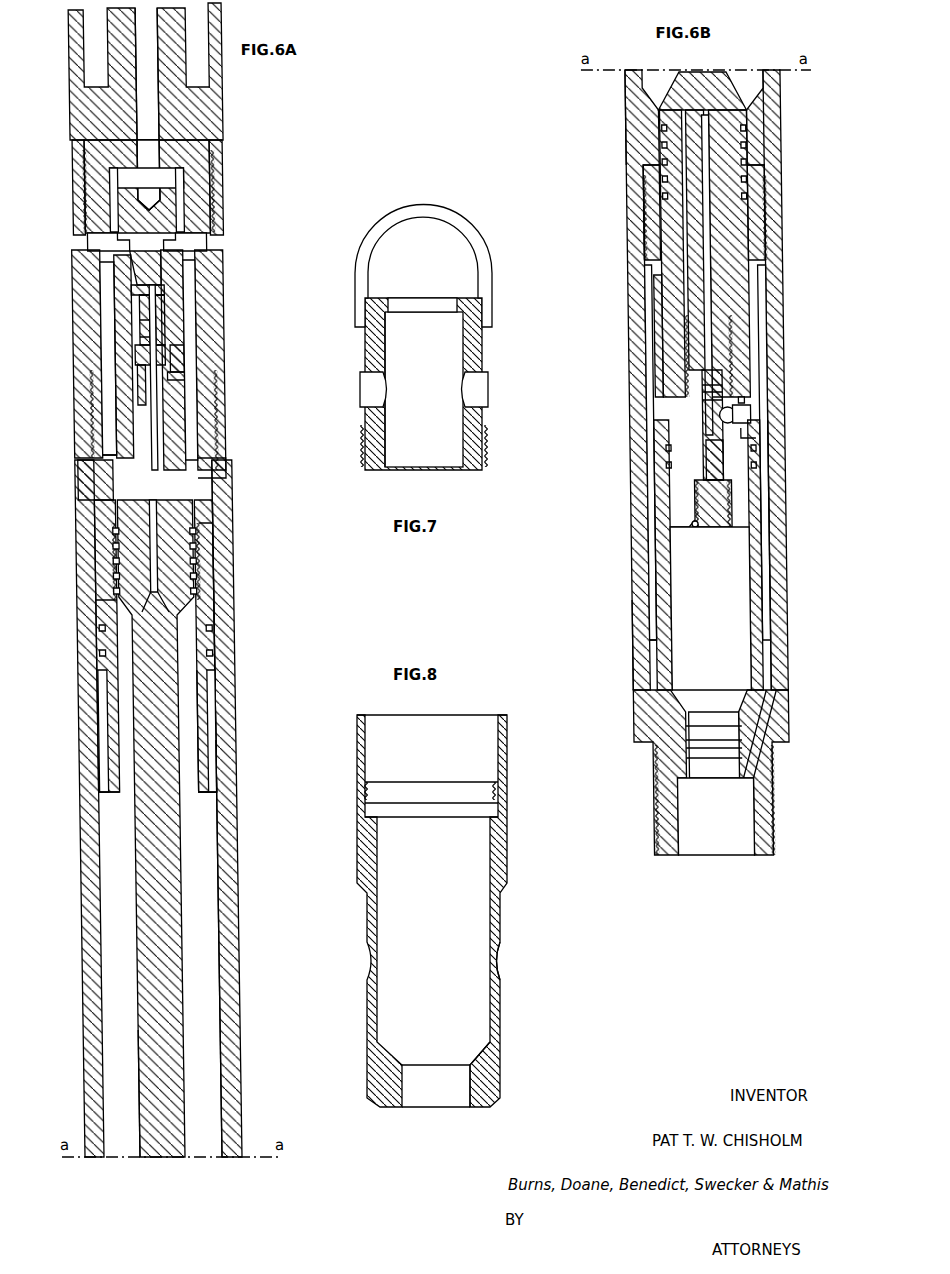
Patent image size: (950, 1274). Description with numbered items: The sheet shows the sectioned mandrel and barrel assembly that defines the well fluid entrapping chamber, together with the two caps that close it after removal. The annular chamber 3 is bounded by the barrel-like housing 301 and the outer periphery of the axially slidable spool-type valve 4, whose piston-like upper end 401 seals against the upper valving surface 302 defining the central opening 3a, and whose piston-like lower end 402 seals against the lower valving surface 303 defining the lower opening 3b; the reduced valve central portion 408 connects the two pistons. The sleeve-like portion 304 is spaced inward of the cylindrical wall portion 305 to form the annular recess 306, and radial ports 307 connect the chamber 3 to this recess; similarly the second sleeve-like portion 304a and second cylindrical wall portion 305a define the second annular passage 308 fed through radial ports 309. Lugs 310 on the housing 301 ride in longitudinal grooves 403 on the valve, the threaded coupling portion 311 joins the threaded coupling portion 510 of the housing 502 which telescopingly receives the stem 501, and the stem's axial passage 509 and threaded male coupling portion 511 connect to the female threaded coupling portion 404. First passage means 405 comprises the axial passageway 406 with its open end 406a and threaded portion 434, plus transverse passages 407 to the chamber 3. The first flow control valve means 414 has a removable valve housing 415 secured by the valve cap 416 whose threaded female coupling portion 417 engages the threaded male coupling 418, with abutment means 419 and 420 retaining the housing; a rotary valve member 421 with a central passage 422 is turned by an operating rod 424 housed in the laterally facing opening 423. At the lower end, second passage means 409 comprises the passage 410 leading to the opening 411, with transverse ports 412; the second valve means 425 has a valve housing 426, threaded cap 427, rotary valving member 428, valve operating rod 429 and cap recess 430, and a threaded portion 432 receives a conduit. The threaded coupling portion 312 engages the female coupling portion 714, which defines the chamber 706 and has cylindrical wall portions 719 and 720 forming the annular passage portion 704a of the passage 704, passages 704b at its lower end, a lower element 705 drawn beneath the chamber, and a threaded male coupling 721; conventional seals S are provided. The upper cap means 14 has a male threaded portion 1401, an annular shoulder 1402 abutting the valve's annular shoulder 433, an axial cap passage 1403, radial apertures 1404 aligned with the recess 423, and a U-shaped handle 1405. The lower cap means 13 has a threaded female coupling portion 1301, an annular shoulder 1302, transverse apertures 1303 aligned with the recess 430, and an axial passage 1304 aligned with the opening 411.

In FIG. 6A, the annular chamber 3 is at (200, 890).
In FIG. 6A, the upper central opening 3a is at (205, 530).
In FIG. 6B, the lower central opening 3b is at (650, 118).
In FIG. 6A, the spool-type valve 4 is at (175, 975).
In FIG. 8, the lower cap means 13 is at (503, 862).
In FIG. 7, the upper cap means 14 is at (475, 355).
In FIG. 6A, the housing 301 is at (222, 940).
In FIG. 6B, the housing 301 is at (765, 95).
In FIG. 6A, the upper valving surface 302 is at (95, 528).
In FIG. 6B, the lower valving surface 303 is at (641, 210).
In FIG. 6A, the sleeve-like portion 304 is at (198, 722).
In FIG. 6B, the second sleeve-like portion 304a is at (660, 353).
In FIG. 6A, the cylindrical wall portion 305 is at (205, 793).
In FIG. 6B, the second cylindrical wall portion 305a is at (645, 295).
In FIG. 6A, the annular recess 306 is at (212, 760).
In FIG. 6A, the radial ports 307 is at (198, 690).
In FIG. 6B, the second annular passage 308 is at (655, 330).
In FIG. 6B, the radial ports 309 is at (655, 283).
In FIG. 6A, the lugs 310 is at (205, 480).
In FIG. 6A, the threaded coupling portion 311 is at (215, 462).
In FIG. 6B, the threaded coupling portion 312 is at (755, 237).
In FIG. 6A, the piston-like upper end 401 is at (170, 556).
In FIG. 6B, the piston-like lower end 402 is at (658, 226).
In FIG. 6A, the longitudinal grooves 403 is at (172, 350).
In FIG. 6A, the female threaded coupling portion 404 is at (172, 310).
In FIG. 6A, the first passage means 405 is at (160, 512).
In FIG. 6A, the axial passageway 406 is at (142, 500).
In FIG. 6A, the open end 406a is at (135, 298).
In FIG. 6A, the transverse passages 407 is at (118, 596).
In FIG. 6A, the valve central portion 408 is at (175, 1030).
In FIG. 6B, the second passage means 409 is at (740, 175).
In FIG. 6B, the passage 410 is at (700, 190).
In FIG. 6B, the opening 411 is at (716, 520).
In FIG. 6B, the transverse ports 412 is at (745, 135).
In FIG. 6A, the first flow control valve means 414 is at (160, 330).
In FIG. 6A, the valve housing 415 is at (135, 385).
In FIG. 6A, the valve cap 416 is at (122, 402).
In FIG. 6A, the threaded female coupling portion 417 is at (120, 425).
In FIG. 6A, the threaded male coupling 418 is at (128, 447).
In FIG. 6A, the abutment means 419 is at (140, 320).
In FIG. 6A, the abutment means 420 is at (140, 338).
In FIG. 6A, the rotary valve member 421 is at (165, 405).
In FIG. 6A, the central passage 422 is at (137, 360).
In FIG. 6A, the laterally facing opening 423 is at (178, 368).
In FIG. 6A, the operating rod 424 is at (172, 382).
In FIG. 6B, the second valve means 425 is at (700, 402).
In FIG. 6B, the valve housing 426 is at (705, 414).
In FIG. 6B, the threaded cap 427 is at (680, 505).
In FIG. 6B, the rotary valving member 428 is at (740, 415).
In FIG. 6B, the valve operating rod 429 is at (736, 405).
In FIG. 6B, the cap recess 430 is at (750, 430).
In FIG. 6B, the threaded portion 432 is at (688, 527).
In FIG. 6A, the annular shoulder 433 is at (128, 258).
In FIG. 6A, the threaded portion 434 is at (170, 286).
In FIG. 6A, the stem 501 is at (170, 130).
In FIG. 6A, the housing 502 is at (212, 188).
In FIG. 6A, the axial passage 509 is at (150, 96).
In FIG. 6A, the threaded coupling portion 510 is at (200, 440).
In FIG. 6A, the threaded male coupling portion 511 is at (180, 248).
In FIG. 6B, the passage 704 is at (655, 490).
In FIG. 6B, the annular passage portion 704a is at (768, 480).
In FIG. 6B, the passages 704b is at (774, 690).
In FIG. 6B, the lower nut 705 is at (652, 690).
In FIG. 6B, the chamber 706 is at (731, 640).
In FIG. 6B, the female coupling portion 714 is at (772, 313).
In FIG. 6B, the cylindrical wall portion 719 is at (648, 612).
In FIG. 6B, the cylindrical wall portion 720 is at (660, 578).
In FIG. 6B, the threaded male coupling 721 is at (762, 792).
In FIG. 6A, the seals S is at (195, 590).
In FIG. 6B, the seals S is at (663, 146).
In FIG. 8, the threaded female coupling portion 1301 is at (500, 792).
In FIG. 8, the annular shoulder 1302 is at (500, 1062).
In FIG. 8, the transverse apertures 1303 is at (496, 962).
In FIG. 8, the axial passage 1304 is at (420, 1075).
In FIG. 7, the male threaded portion 1401 is at (366, 456).
In FIG. 7, the annular shoulder 1402 is at (387, 325).
In FIG. 7, the axial cap passage 1403 is at (412, 298).
In FIG. 7, the radial apertures 1404 is at (482, 385).
In FIG. 7, the U-shaped handle 1405 is at (458, 225).